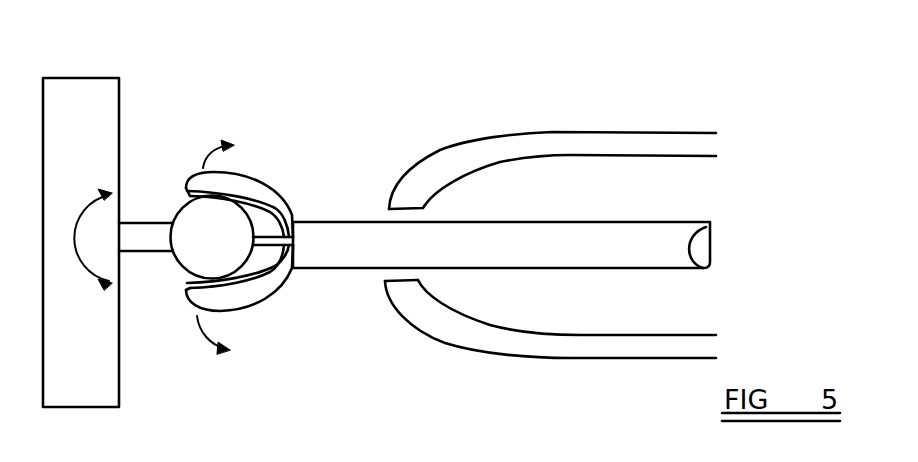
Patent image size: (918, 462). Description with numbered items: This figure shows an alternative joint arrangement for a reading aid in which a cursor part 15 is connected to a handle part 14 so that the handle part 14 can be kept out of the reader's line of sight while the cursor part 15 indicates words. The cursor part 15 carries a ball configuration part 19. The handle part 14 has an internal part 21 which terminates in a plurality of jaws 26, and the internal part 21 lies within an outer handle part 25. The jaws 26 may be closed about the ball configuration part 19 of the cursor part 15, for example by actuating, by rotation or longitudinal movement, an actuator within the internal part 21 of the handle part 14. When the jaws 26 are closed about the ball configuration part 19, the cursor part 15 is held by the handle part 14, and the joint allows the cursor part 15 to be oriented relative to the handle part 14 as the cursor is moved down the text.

The handle part 14 is at (550, 198).
The cursor part 15 is at (98, 127).
The ball configuration part 19 is at (200, 243).
The internal part 21 is at (568, 222).
The outer handle part 25 is at (473, 160).
The jaws 26 is at (265, 232).